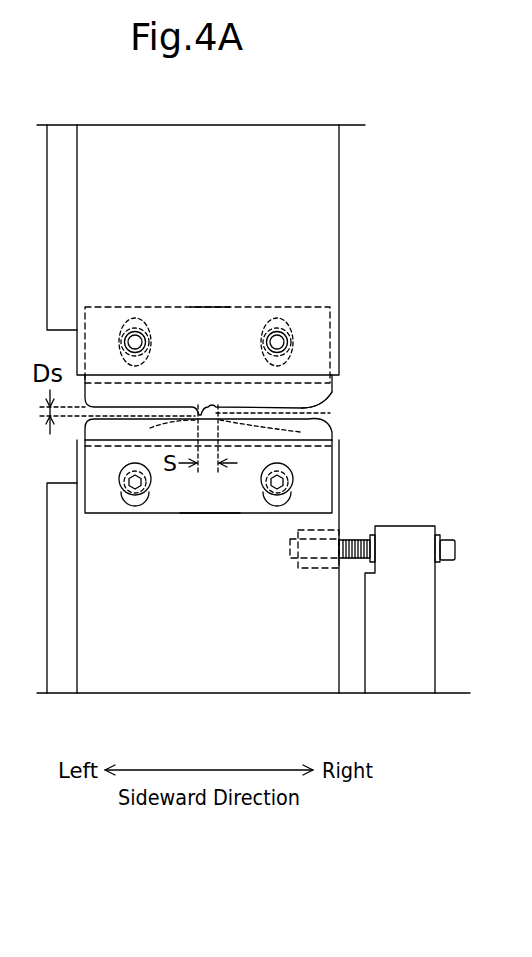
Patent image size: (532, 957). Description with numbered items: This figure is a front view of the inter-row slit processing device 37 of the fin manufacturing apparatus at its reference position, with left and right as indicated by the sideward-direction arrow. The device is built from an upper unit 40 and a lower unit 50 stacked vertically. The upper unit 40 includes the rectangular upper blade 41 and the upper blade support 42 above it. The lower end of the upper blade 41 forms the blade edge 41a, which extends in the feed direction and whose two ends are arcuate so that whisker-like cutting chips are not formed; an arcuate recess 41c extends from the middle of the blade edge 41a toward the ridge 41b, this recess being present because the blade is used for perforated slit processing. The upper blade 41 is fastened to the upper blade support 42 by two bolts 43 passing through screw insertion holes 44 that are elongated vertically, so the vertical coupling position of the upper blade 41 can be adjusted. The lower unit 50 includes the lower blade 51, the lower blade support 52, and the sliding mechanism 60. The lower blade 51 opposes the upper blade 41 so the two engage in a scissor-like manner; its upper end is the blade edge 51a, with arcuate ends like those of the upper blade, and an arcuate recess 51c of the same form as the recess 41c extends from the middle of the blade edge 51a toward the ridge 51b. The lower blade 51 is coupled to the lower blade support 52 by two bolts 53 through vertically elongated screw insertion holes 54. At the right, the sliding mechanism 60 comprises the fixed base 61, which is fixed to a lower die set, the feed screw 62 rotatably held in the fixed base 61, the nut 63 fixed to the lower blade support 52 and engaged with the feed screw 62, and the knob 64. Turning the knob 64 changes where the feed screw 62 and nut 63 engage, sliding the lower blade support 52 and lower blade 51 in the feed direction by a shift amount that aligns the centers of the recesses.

The inter-row slit processing device 37 is at (450, 90).
The upper unit 40 is at (402, 176).
The upper blade 41 is at (333, 390).
The blade edge 41a is at (154, 429).
The ridge 41b is at (208, 306).
The recess 41c is at (269, 431).
The upper blade support 42 is at (340, 297).
The bolts 43 is at (252, 340).
The screw insertion holes 44 is at (141, 318).
The lower unit 50 is at (415, 453).
The lower blade 51 is at (334, 431).
The blade edge 51a is at (322, 404).
The ridge 51b is at (205, 514).
The recess 51c is at (196, 410).
The lower blade support 52 is at (340, 476).
The bolts 53 is at (292, 488).
The screw insertion holes 54 is at (262, 490).
The sliding mechanism 60 is at (396, 590).
The fixed base 61 is at (437, 668).
The feed screw 62 is at (352, 538).
The nut 63 is at (302, 572).
The knob 64 is at (447, 538).